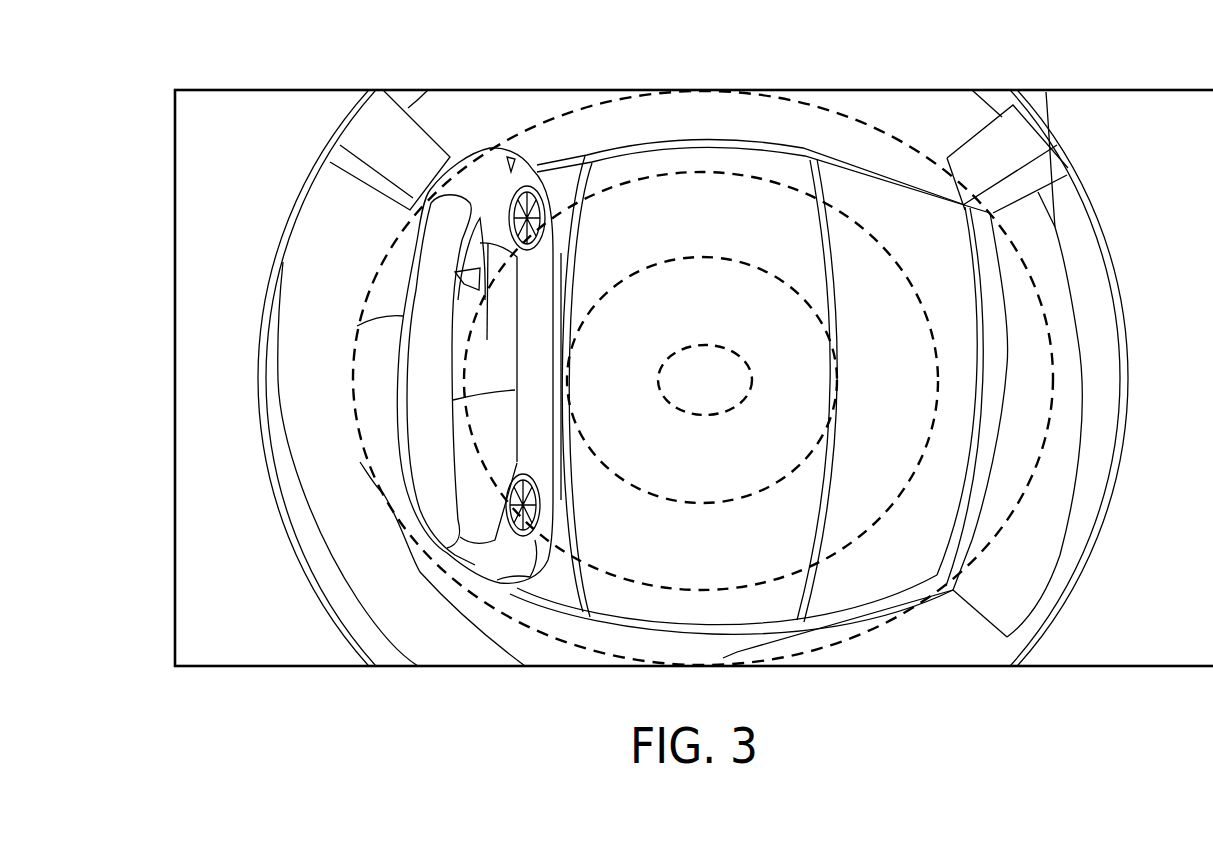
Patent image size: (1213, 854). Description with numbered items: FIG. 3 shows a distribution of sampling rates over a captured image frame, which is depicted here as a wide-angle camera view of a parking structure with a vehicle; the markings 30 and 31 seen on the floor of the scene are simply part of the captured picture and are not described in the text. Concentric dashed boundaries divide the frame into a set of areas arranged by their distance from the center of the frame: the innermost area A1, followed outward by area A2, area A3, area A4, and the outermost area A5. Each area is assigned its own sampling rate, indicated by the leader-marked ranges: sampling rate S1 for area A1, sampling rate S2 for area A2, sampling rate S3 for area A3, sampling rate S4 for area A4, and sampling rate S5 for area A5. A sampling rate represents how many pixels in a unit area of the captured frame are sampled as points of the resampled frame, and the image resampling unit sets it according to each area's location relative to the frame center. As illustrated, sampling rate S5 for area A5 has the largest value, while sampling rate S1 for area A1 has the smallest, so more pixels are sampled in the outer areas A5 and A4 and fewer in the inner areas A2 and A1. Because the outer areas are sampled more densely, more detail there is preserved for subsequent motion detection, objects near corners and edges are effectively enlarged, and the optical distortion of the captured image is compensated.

The sampling rate S1 is at (705, 345).
The sampling rate S2 is at (765, 313).
The sampling rate S3 is at (852, 293).
The sampling rate S4 is at (1020, 283).
The sampling rate S5 is at (1123, 195).
The area A1 is at (689, 394).
The area A2 is at (779, 394).
The area A3 is at (870, 394).
The area A4 is at (962, 393).
The area A5 is at (1146, 394).
The parking space number marking 30 is at (702, 161).
The parking space number marking 31 is at (907, 204).